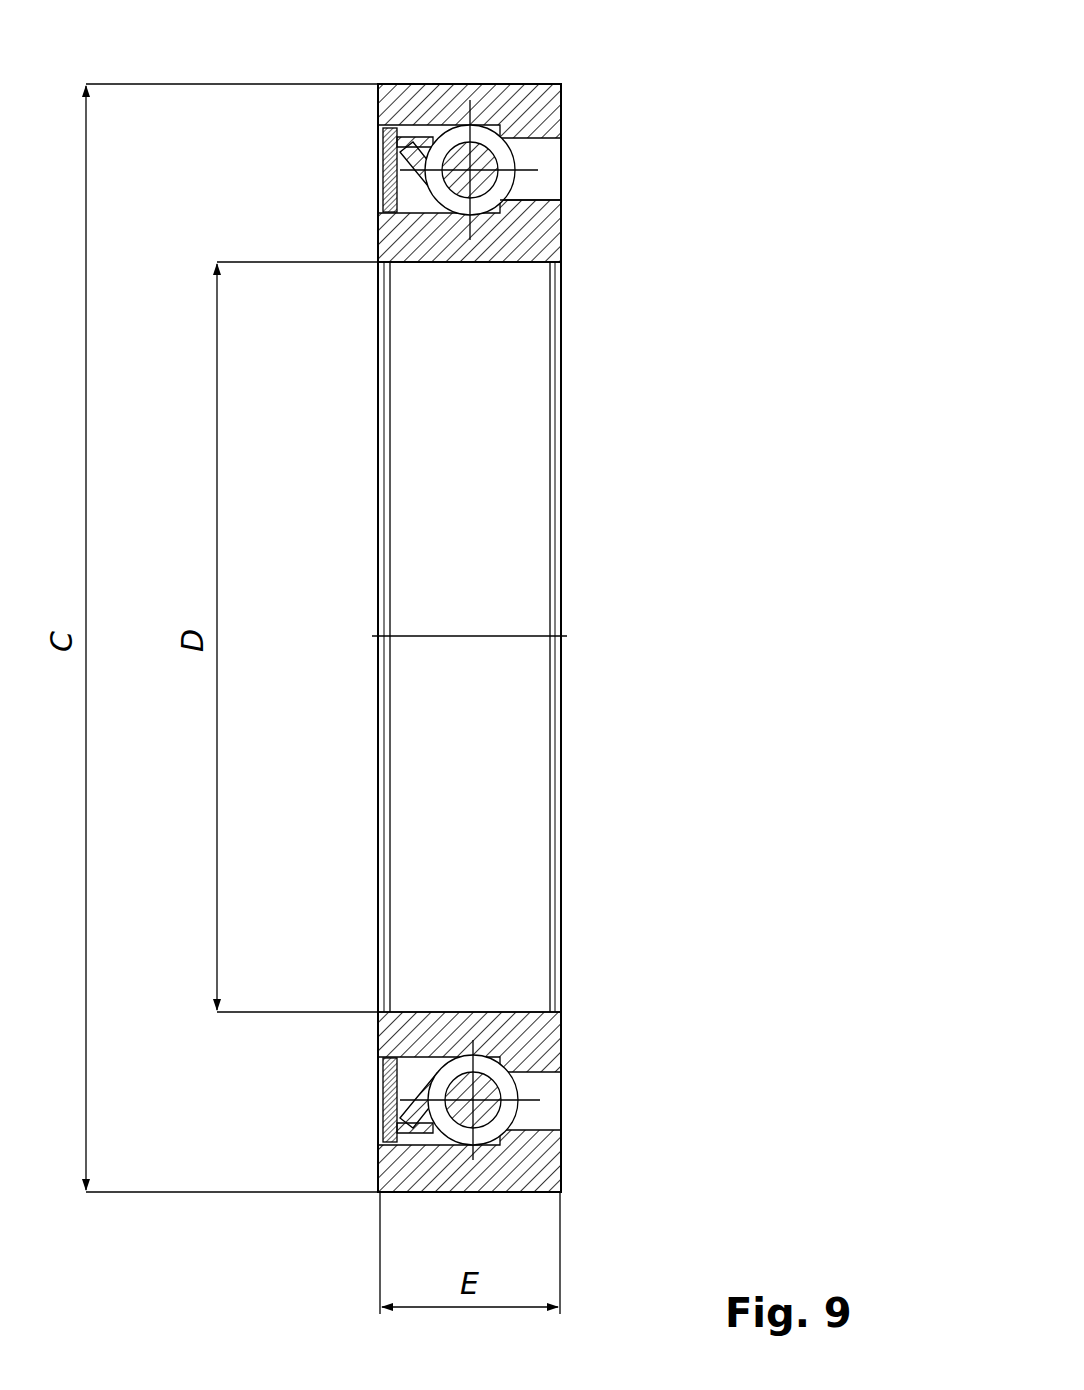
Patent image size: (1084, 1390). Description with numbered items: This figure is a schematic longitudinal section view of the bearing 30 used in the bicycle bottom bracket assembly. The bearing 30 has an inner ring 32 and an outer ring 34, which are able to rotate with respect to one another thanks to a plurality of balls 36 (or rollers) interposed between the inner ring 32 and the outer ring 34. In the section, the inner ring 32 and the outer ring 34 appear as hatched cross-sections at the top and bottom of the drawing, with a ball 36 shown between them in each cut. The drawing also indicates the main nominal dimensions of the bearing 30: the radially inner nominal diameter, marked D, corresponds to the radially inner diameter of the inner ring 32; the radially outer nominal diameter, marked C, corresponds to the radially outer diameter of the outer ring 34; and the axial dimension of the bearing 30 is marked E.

The bearing 30 is at (647, 485).
The inner ring 32 is at (561, 225).
The outer ring 34 is at (561, 110).
The balls 36 is at (507, 1100).